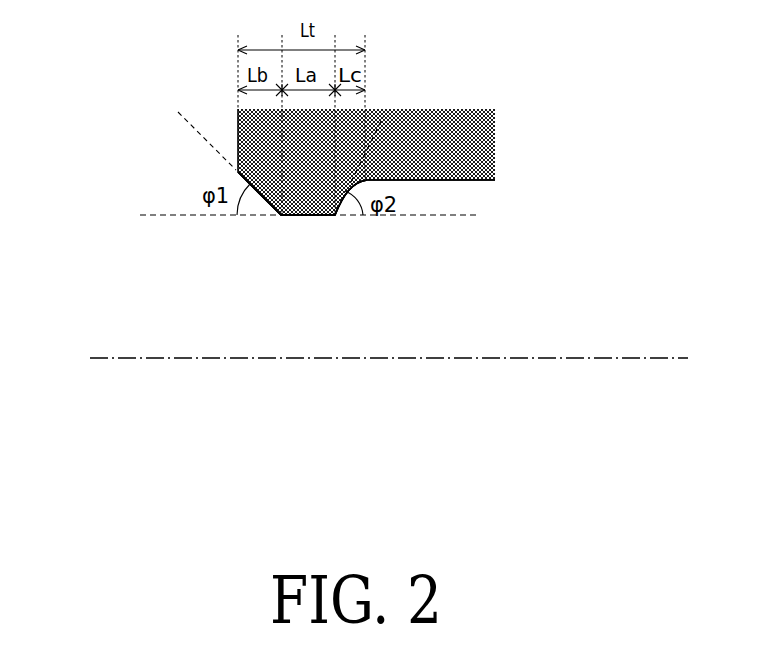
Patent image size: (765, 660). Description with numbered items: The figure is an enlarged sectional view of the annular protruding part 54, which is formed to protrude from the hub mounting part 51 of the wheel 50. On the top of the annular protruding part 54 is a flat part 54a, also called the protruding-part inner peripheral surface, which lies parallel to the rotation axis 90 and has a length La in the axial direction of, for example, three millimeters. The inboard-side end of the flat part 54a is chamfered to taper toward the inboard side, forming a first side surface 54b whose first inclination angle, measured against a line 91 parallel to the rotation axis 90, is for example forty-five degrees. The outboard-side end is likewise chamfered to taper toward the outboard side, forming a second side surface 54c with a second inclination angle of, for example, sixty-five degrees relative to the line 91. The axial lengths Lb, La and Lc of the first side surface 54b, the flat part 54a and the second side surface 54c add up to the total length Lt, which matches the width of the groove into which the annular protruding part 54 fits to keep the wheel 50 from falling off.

The wheel 50 is at (450, 77).
The hub mounting part 51 is at (482, 130).
The annular protruding part 54 is at (303, 200).
The flat part 54a is at (317, 218).
The first side surface 54b is at (264, 201).
The second side surface 54c is at (360, 205).
The rotation axis 90 is at (133, 358).
The line parallel to the rotation axis 91 is at (452, 218).